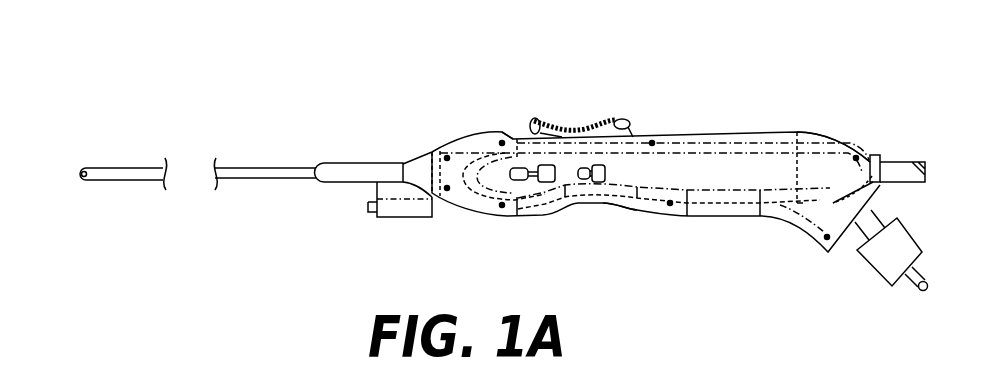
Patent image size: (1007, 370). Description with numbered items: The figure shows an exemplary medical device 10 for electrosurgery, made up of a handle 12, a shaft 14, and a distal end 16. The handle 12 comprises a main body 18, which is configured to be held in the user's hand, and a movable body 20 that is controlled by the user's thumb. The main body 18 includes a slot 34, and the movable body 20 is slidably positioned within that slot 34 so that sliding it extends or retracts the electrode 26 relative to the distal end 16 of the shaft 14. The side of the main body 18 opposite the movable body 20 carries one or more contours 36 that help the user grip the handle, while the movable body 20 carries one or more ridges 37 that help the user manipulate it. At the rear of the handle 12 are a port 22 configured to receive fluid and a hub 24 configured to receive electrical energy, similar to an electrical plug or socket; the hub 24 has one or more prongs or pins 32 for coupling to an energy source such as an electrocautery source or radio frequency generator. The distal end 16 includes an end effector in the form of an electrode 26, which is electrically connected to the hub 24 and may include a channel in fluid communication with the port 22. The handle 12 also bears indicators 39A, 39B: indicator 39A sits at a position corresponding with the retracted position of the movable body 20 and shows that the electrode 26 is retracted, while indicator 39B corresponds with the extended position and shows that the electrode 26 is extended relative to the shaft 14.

The medical device 10 is at (135, 98).
The handle 12 is at (741, 99).
The shaft 14 is at (252, 165).
The distal end 16 is at (126, 185).
The main body 18 is at (773, 131).
The movable body 20 is at (529, 118).
The port 22 is at (892, 162).
The hub 24 is at (907, 236).
The electrode portion 26 is at (81, 183).
The pins 32 is at (912, 292).
The slot 34 is at (513, 127).
The contours 36 is at (627, 212).
The ridges 37 is at (599, 118).
The indicator 39A is at (600, 165).
The indicator 39B is at (530, 182).